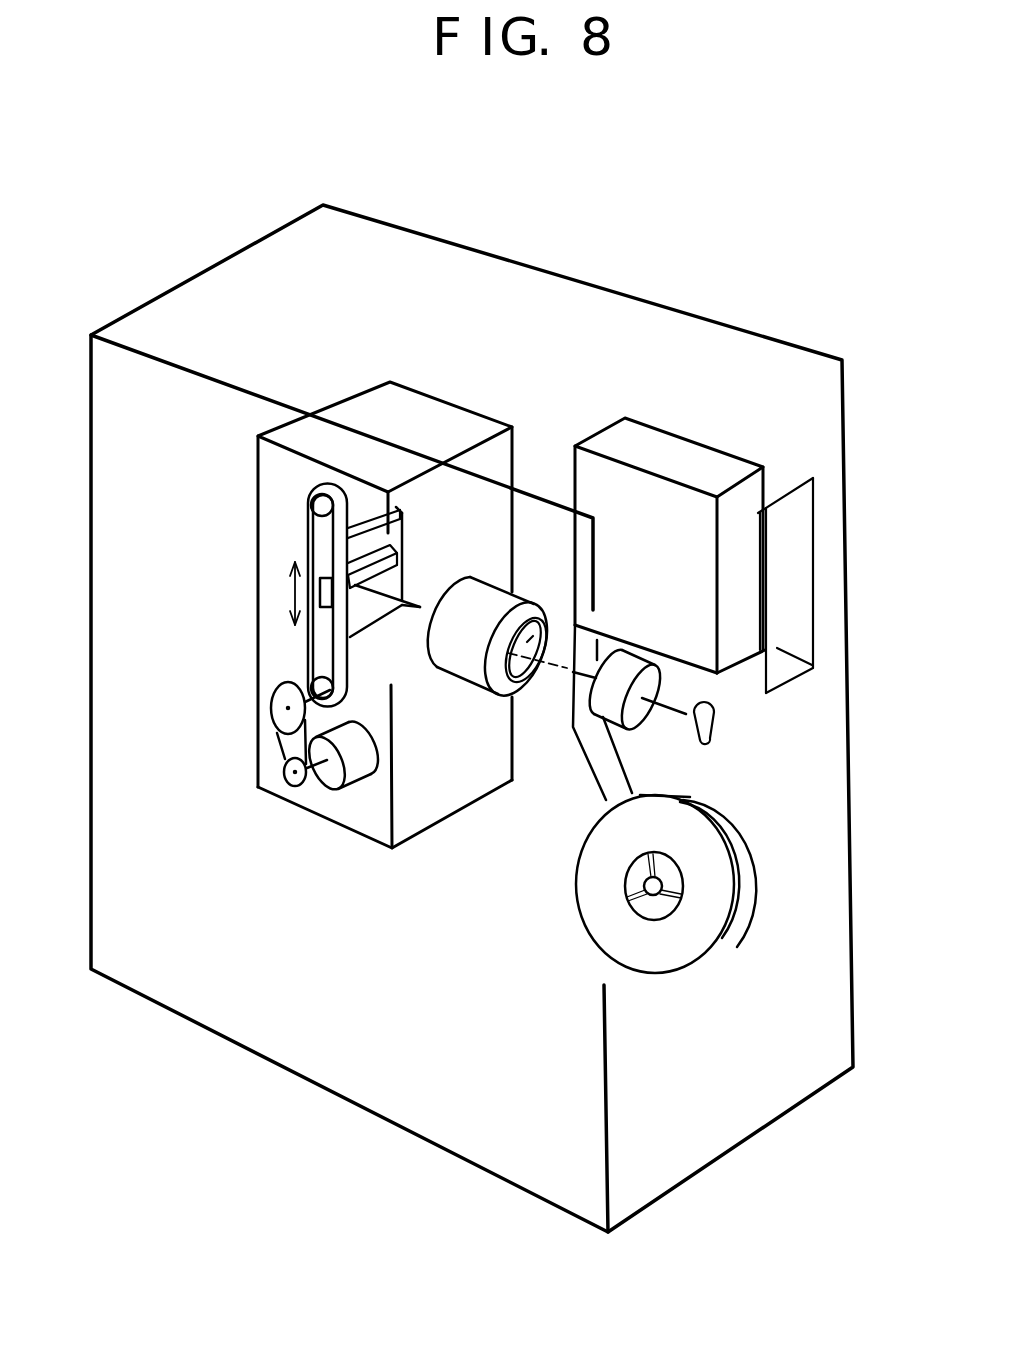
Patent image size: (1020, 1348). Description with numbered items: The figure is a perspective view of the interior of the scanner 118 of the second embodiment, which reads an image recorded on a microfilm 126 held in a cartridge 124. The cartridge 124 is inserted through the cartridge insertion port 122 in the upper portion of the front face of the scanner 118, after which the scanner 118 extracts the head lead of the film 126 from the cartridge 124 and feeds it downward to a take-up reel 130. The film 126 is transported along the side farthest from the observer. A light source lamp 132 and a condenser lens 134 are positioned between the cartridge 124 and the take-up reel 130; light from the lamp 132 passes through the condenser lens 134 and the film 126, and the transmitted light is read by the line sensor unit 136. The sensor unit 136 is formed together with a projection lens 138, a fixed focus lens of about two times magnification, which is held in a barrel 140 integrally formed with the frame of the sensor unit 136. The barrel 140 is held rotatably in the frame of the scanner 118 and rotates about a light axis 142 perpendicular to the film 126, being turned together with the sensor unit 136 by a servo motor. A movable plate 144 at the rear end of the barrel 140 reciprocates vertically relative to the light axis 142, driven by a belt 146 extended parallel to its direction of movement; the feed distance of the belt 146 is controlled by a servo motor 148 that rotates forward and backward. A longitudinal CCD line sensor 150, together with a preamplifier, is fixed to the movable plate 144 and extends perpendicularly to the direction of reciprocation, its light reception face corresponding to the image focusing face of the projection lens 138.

The scanner 118 is at (361, 1109).
The cartridge insertion port 122 is at (783, 670).
The cartridge 124 is at (703, 440).
The microfilm 126 is at (590, 780).
The take-up reel 130 is at (677, 975).
The light source lamp 132 is at (713, 733).
The condenser lens 134 is at (660, 685).
The line sensor unit 136 is at (470, 413).
The projection lens 138 is at (543, 658).
The barrel 140 is at (515, 590).
The light axis 142 is at (563, 672).
The movable plate 144 is at (402, 562).
The belt 146 is at (308, 535).
The servo motor 148 is at (353, 778).
The CCD line sensor 150 is at (430, 580).